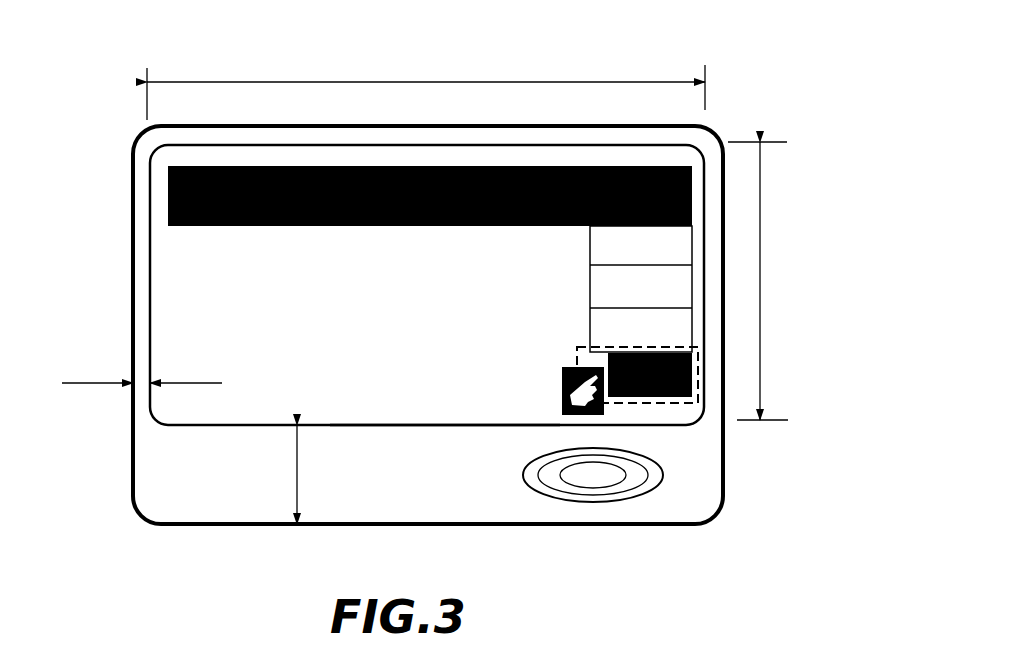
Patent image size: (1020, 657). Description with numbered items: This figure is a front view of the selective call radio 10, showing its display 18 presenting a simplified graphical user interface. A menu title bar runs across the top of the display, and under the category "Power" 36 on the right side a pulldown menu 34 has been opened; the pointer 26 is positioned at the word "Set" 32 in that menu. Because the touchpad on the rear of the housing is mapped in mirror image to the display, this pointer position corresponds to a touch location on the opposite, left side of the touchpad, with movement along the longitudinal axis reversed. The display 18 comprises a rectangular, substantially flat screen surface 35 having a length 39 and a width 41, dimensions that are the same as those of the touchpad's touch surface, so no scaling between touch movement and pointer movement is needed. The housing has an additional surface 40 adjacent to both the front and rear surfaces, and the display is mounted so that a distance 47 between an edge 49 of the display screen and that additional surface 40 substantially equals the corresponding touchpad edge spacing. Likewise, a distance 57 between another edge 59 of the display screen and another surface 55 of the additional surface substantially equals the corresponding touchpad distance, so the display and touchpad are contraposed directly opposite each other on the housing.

The selective call radio 10 is at (442, 110).
The display 18 is at (215, 350).
The pointer 26 is at (603, 412).
The word "Set" 32 is at (697, 367).
The pulldown menu 34 is at (667, 287).
The screen surface 35 is at (212, 312).
The category "Power" 36 is at (613, 165).
The length 39 is at (520, 82).
The additional surface 40 is at (148, 198).
The width 41 is at (760, 332).
The distance 47 is at (88, 383).
The edge of the display screen 49 is at (148, 288).
The other surface 55 is at (560, 524).
The distance 57 is at (297, 477).
The edge of the display screen 59 is at (437, 425).